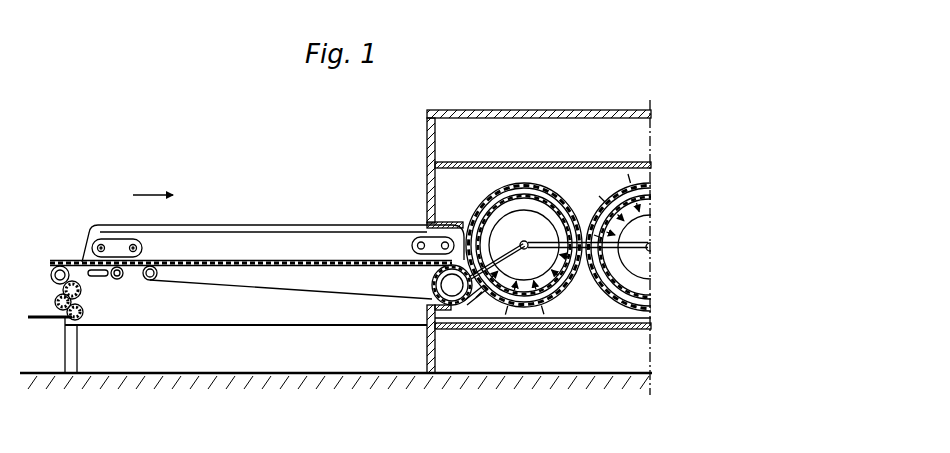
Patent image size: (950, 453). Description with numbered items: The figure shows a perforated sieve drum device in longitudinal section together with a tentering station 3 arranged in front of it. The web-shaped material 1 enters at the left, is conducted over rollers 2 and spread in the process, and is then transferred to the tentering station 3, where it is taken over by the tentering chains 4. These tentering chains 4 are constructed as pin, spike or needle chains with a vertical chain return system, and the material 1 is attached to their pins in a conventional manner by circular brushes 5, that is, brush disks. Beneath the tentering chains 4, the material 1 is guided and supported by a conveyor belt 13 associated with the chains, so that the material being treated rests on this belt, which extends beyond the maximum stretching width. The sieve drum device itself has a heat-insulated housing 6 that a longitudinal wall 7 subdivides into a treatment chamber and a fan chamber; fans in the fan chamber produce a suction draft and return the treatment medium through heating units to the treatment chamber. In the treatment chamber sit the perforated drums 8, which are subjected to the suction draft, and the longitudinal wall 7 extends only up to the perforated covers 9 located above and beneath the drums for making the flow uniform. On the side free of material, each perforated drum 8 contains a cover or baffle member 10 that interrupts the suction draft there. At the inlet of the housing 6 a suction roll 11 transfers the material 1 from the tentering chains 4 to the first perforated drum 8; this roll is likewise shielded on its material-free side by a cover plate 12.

The web-shaped material 1 is at (32, 318).
The rollers 2 is at (57, 298).
The tentering station 3 is at (121, 247).
The tentering chains 4 is at (216, 225).
The circular brushes 5 is at (117, 280).
The heat-insulated housing 6 is at (458, 111).
The longitudinal wall 7 is at (450, 182).
The perforated drums 8 is at (556, 193).
The perforated covers 9 is at (605, 162).
The cover or baffle member 10 is at (508, 215).
The suction roll 11 is at (434, 296).
The cover plate 12 is at (431, 279).
The conveyor belt 13 is at (245, 291).